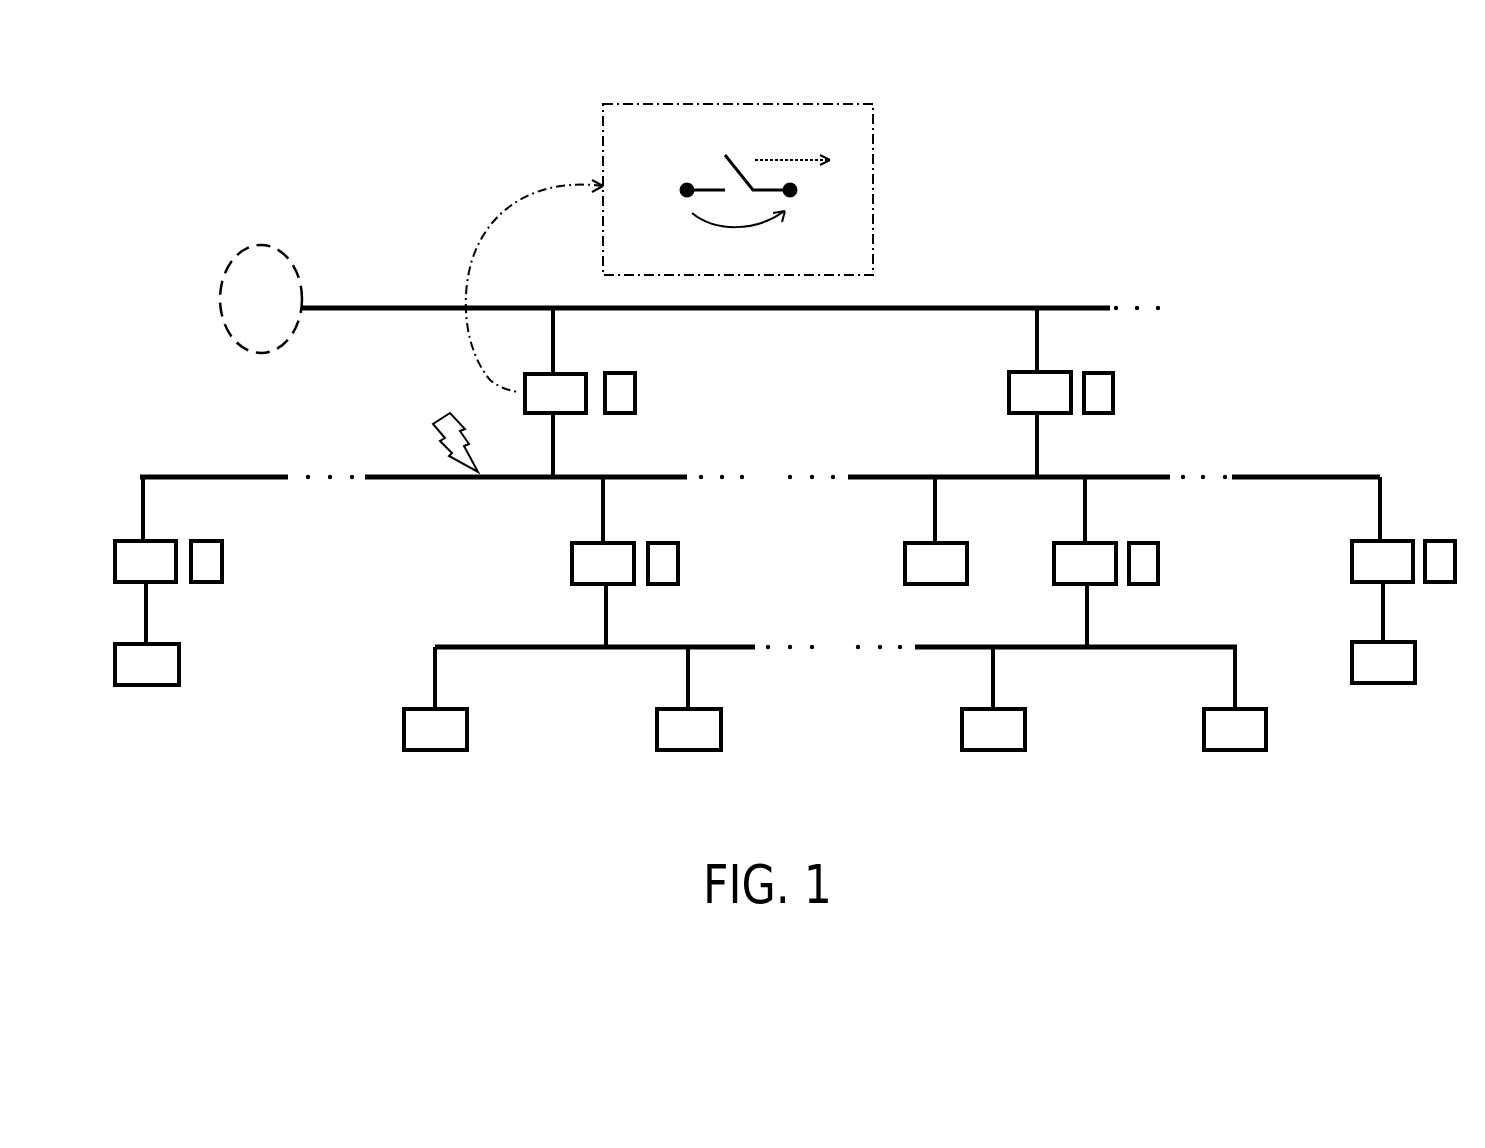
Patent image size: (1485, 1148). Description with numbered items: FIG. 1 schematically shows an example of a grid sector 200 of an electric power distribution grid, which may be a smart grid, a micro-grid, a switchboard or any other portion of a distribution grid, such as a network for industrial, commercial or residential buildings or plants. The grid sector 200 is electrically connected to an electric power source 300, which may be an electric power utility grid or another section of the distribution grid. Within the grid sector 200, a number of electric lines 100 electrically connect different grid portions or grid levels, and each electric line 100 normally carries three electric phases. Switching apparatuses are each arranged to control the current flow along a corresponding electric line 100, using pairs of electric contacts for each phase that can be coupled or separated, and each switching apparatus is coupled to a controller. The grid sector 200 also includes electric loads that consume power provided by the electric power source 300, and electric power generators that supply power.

The electric line 100 is at (560, 450).
The grid sector 200 is at (1318, 253).
The electric power source 300 is at (261, 299).